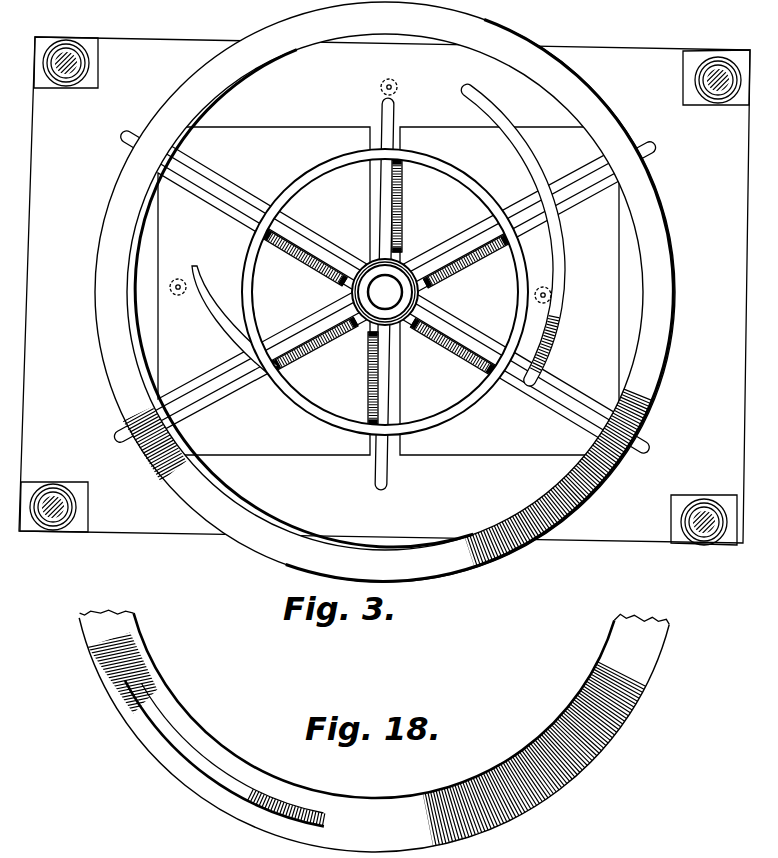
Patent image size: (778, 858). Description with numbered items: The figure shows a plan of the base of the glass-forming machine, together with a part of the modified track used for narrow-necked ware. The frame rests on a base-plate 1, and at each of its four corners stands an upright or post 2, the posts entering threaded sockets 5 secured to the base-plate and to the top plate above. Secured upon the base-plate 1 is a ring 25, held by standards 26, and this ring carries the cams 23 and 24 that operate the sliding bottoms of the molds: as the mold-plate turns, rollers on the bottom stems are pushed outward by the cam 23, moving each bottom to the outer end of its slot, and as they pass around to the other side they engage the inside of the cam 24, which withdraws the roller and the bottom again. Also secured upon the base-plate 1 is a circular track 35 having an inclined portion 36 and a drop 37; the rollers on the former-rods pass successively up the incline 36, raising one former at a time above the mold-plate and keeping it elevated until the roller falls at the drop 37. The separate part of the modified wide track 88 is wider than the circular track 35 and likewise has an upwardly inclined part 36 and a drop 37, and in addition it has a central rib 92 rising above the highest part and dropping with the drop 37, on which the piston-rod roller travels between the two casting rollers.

In FIG. 3, the base-plate 1 is at (384, 299).
In FIG. 3, the upright or post 2 is at (88, 63).
In FIG. 3, the threaded socket 5 is at (74, 50).
In FIG. 3, the cam 23 is at (208, 316).
In FIG. 3, the cam 24 is at (556, 247).
In FIG. 3, the ring 25 is at (446, 418).
In FIG. 3, the standard 26 is at (455, 246).
In FIG. 3, the circular track 35 is at (385, 292).
In FIG. 3, the inclined portion 36 is at (594, 490).
In FIG. 18, the inclined portion 36 is at (574, 785).
In FIG. 3, the drop 37 is at (146, 439).
In FIG. 18, the drop 37 is at (106, 683).
In FIG. 18, the wide track 88 is at (315, 819).
In FIG. 18, the central rib 92 is at (167, 739).